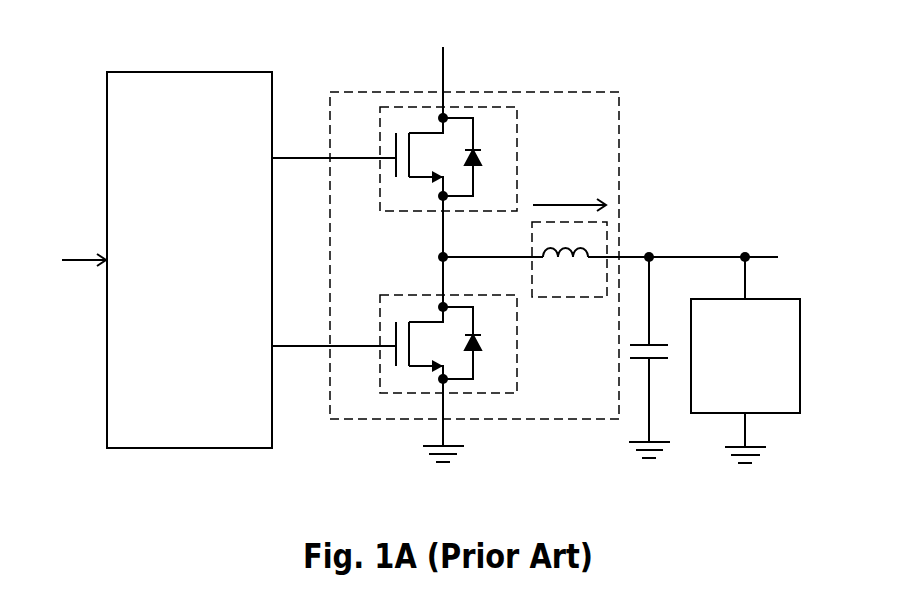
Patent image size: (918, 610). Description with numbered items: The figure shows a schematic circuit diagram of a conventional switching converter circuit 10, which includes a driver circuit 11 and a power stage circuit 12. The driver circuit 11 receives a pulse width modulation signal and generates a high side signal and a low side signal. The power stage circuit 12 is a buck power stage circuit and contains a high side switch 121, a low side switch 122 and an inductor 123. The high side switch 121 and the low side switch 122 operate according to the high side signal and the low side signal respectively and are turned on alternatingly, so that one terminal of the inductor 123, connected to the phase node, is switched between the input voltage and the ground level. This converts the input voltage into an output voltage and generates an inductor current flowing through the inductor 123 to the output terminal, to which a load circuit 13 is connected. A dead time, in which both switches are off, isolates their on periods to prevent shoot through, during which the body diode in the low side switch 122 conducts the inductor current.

The switching converter circuit 10 is at (737, 45).
The driver circuit 11 is at (155, 115).
The power stage circuit 12 is at (366, 411).
The high side switch 121 is at (517, 146).
The low side switch 122 is at (517, 358).
The inductor 123 is at (597, 294).
The load circuit 13 is at (728, 406).